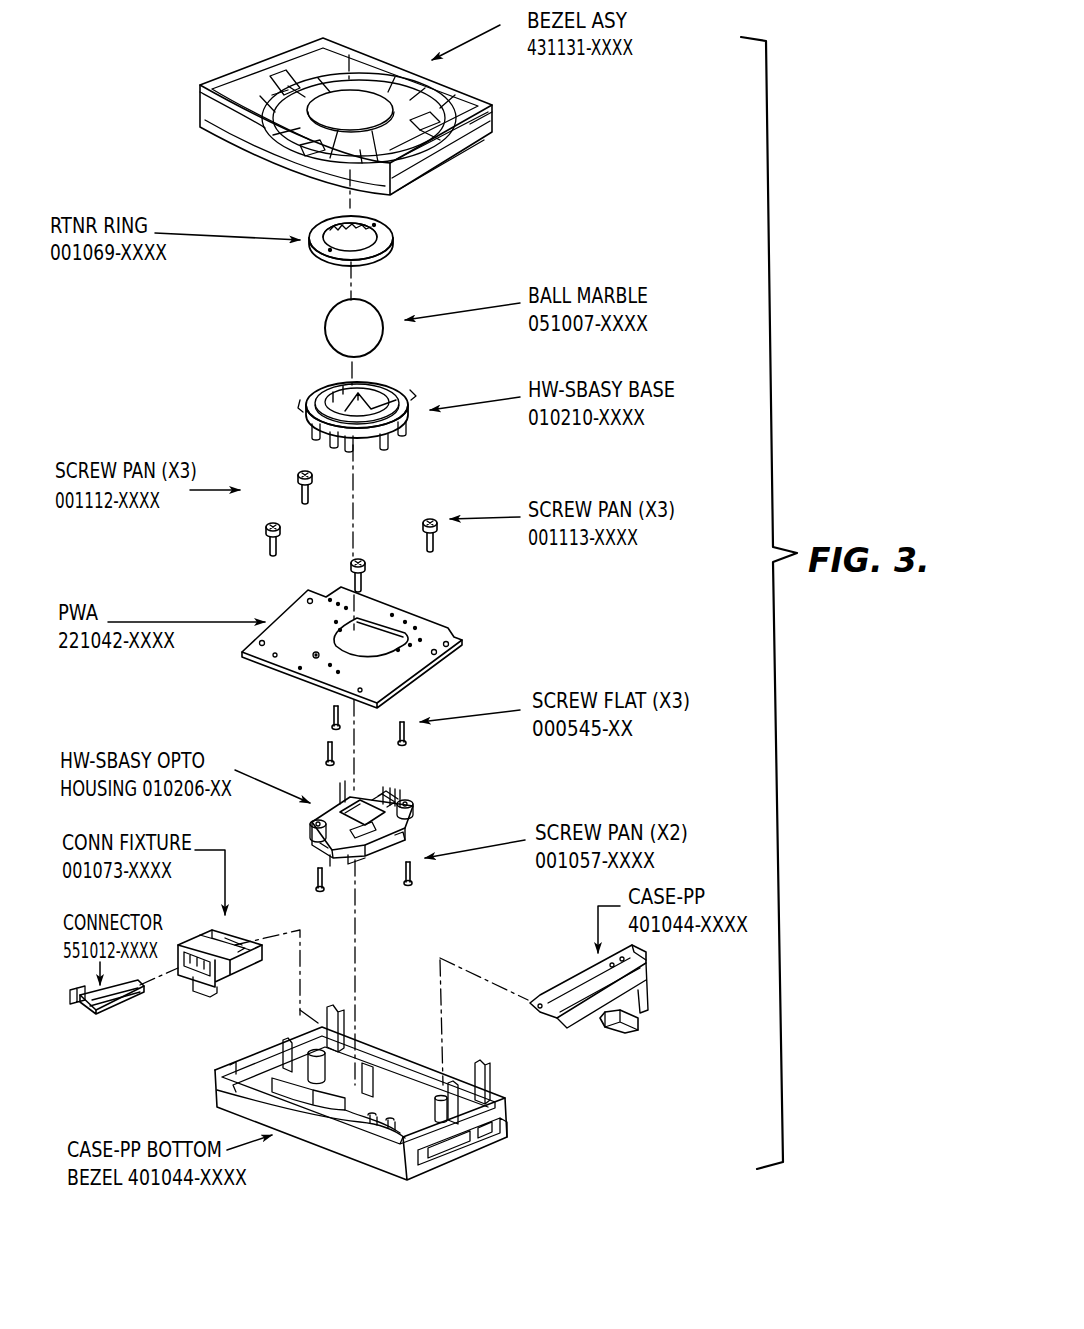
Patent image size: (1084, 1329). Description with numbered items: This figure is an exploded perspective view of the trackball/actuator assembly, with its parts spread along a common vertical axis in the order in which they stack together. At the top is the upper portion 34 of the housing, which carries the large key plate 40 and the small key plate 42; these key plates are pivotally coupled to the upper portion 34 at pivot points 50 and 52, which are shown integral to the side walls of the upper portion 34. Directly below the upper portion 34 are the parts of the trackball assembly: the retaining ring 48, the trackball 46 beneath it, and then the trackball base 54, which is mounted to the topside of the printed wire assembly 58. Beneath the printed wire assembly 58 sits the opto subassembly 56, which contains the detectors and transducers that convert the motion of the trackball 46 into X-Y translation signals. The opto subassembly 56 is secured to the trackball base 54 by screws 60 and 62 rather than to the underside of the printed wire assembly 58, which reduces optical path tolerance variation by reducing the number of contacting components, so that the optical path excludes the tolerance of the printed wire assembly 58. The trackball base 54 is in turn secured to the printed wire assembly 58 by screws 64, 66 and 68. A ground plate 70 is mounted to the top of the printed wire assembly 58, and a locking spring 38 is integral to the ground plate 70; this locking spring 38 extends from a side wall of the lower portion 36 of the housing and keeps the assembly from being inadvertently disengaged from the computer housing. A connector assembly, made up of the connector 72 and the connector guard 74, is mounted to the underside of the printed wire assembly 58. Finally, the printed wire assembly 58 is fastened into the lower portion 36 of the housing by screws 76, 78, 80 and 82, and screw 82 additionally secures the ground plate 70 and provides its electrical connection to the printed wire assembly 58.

The upper portion 34 is at (482, 105).
The lower portion 36 is at (362, 1148).
The locking spring 38 is at (640, 1028).
The large key plate 40 is at (368, 68).
The small key plate 42 is at (302, 128).
The trackball 46 is at (325, 330).
The retaining ring 48 is at (396, 243).
The pivot point 50 is at (398, 182).
The pivot point 52 is at (480, 158).
The trackball base 54 is at (306, 419).
The opto subassembly 56 is at (418, 809).
The printed wire assembly 58 is at (430, 622).
The screw 60 is at (316, 880).
The screw 62 is at (413, 885).
The screw 64 is at (327, 760).
The screw 66 is at (332, 716).
The screw 68 is at (407, 744).
The ground plate 70 is at (647, 975).
The connector 72 is at (95, 1015).
The connector guard 74 is at (206, 990).
The screw 76 is at (268, 540).
The screw 78 is at (297, 484).
The screw 80 is at (366, 580).
The screw 82 is at (442, 538).